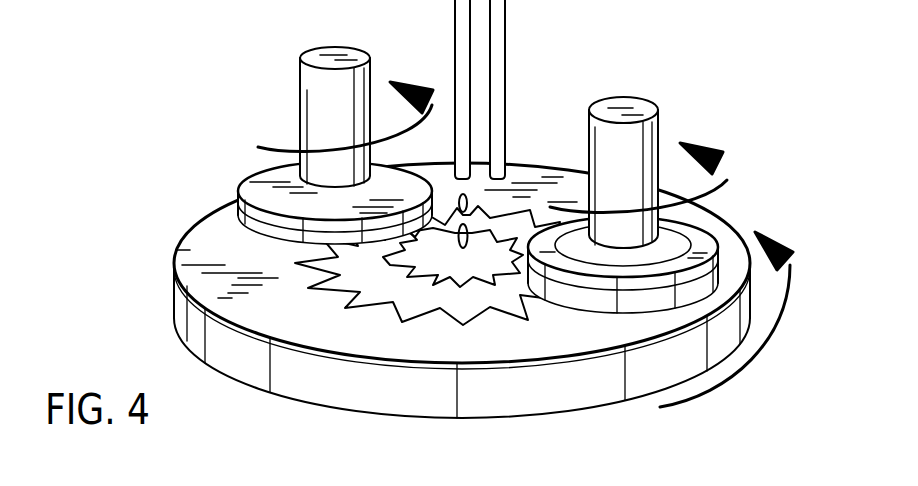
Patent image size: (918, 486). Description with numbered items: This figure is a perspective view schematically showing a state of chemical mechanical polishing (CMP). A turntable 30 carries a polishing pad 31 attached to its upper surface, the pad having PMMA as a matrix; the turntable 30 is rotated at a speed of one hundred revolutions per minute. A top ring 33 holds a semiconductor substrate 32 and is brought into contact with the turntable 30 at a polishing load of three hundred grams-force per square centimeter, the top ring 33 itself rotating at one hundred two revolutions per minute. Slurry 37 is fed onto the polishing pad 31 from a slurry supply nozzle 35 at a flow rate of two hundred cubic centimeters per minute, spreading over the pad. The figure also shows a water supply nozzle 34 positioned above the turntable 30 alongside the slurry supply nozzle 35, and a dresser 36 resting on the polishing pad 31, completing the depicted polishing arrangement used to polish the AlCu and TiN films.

The turntable 30 is at (570, 403).
The polishing pad 31 is at (668, 347).
The semiconductor substrate 32 is at (617, 313).
The top ring 33 is at (673, 238).
The water supply nozzle 34 is at (505, 65).
The slurry supply nozzle 35 is at (455, 31).
The dresser 36 is at (300, 105).
The slurry 37 is at (462, 283).